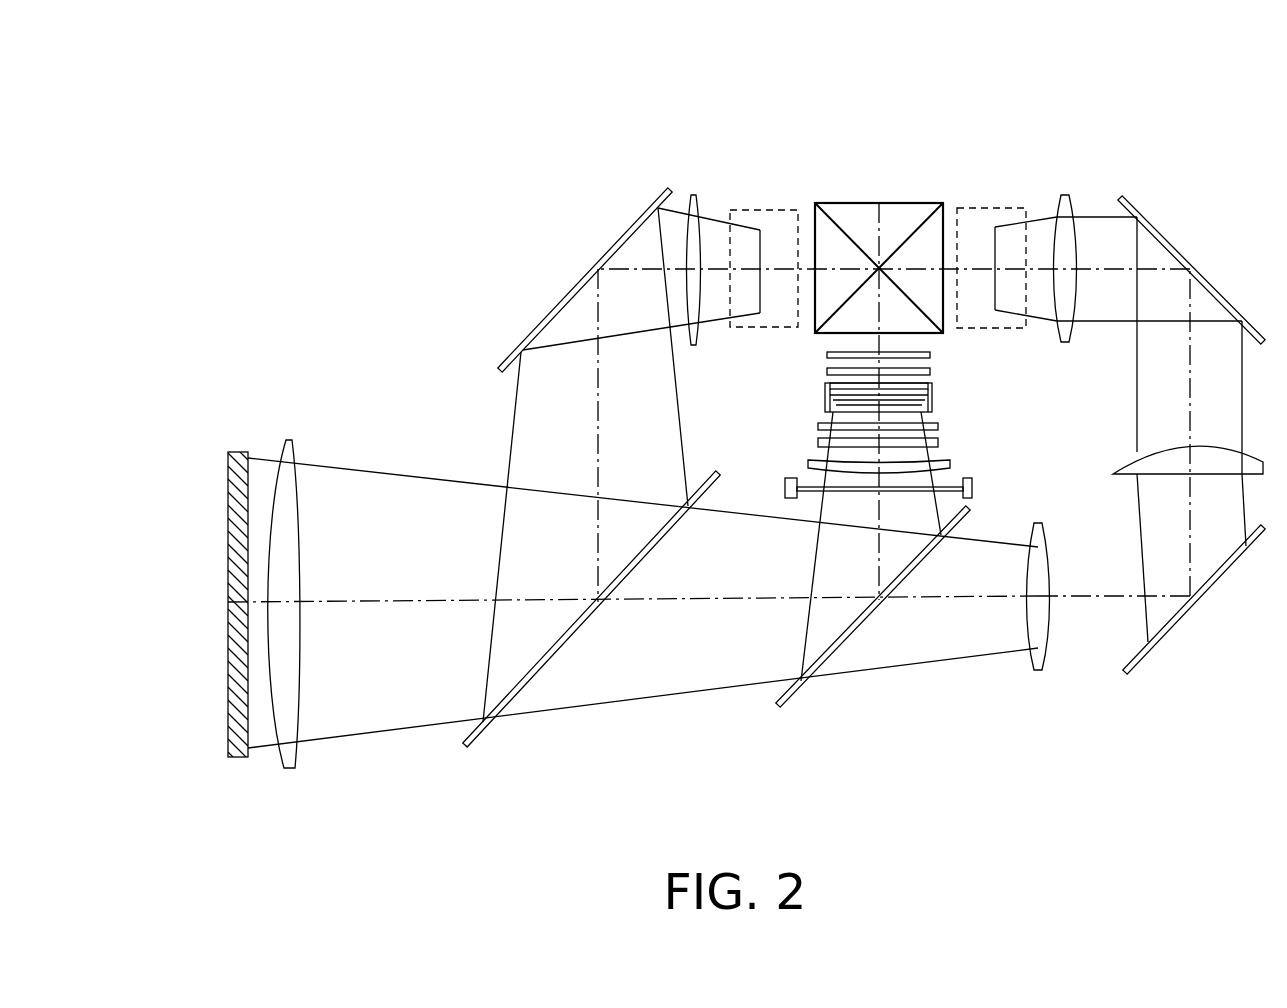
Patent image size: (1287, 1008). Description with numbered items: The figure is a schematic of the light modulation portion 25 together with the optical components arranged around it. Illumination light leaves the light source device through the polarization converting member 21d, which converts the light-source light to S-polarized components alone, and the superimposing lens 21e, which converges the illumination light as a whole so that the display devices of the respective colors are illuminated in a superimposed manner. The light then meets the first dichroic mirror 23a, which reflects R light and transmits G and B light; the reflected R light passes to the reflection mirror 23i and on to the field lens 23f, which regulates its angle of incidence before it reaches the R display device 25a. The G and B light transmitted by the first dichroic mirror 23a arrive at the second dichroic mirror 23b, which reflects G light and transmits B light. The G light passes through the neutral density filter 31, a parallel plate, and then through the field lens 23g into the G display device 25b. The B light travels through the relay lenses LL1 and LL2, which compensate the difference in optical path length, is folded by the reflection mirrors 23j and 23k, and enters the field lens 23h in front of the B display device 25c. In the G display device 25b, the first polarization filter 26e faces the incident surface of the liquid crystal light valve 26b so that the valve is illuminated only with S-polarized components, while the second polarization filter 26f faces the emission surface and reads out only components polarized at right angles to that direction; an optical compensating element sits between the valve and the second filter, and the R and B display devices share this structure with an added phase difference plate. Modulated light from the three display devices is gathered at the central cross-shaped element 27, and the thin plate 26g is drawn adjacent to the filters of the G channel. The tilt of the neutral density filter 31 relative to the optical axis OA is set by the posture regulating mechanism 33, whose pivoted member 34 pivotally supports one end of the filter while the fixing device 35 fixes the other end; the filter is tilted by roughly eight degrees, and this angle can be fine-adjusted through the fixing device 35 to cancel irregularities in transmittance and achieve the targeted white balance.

The polarization converting member 21d is at (240, 452).
The superimposing lens 21e is at (287, 440).
The first dichroic mirror 23a is at (478, 752).
The second dichroic mirror 23b is at (800, 697).
The field lens 23f is at (697, 195).
The field lens 23g is at (813, 463).
The field lens 23h is at (1062, 195).
The reflection mirror 23i is at (622, 232).
The reflection mirror 23j is at (1140, 663).
The reflection mirror 23k is at (1135, 200).
The light modulation portion 25 is at (905, 115).
The R display device 25a is at (768, 210).
The G display device 25b is at (800, 416).
The B display device 25c is at (995, 208).
The liquid crystal light valve 26b is at (938, 392).
The first polarization filter 26e is at (940, 443).
The second polarization filter 26f is at (815, 355).
The lens 26g is at (935, 360).
The cross dichroic prism 27 is at (846, 203).
The neutral density filter 31 is at (848, 493).
The posture regulating mechanism 33 is at (1003, 480).
The pivoted member 34 is at (785, 492).
The fixing device 35 is at (978, 493).
The relay lens LL1 is at (1040, 670).
The relay lens LL2 is at (1113, 474).
The optical axis OA is at (672, 604).